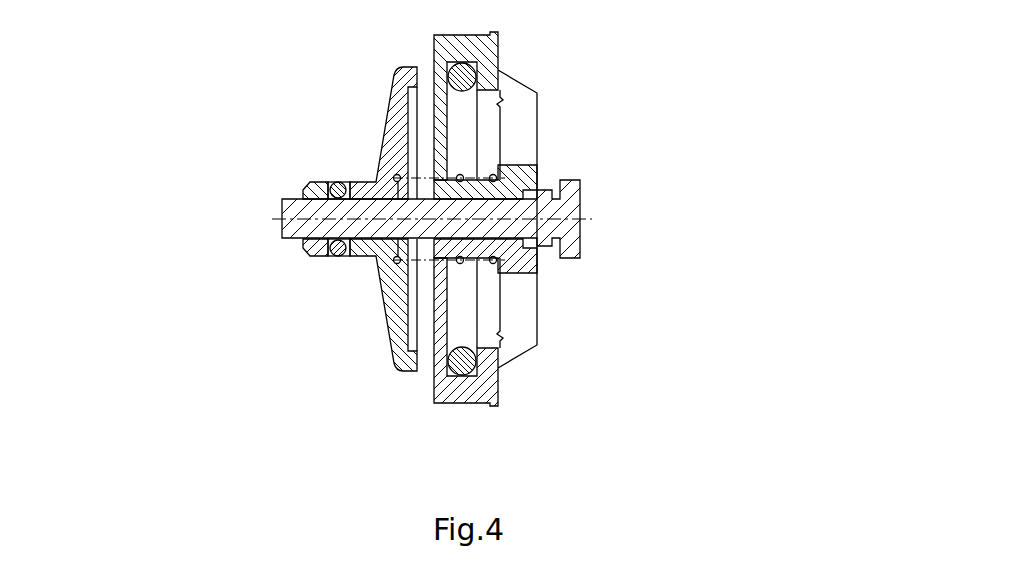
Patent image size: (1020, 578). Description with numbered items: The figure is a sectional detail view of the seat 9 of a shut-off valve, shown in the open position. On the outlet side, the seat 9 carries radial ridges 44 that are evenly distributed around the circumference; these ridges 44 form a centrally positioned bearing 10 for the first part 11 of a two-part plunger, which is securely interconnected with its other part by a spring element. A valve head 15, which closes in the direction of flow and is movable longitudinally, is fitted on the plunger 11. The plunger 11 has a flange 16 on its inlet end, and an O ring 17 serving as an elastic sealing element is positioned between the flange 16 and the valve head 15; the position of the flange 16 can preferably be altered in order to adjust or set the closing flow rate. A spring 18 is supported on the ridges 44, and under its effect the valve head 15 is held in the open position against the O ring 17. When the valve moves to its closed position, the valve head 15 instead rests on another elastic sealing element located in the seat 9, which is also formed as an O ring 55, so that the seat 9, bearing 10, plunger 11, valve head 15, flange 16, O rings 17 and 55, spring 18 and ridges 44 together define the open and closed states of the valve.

The seat 9 is at (483, 390).
The bearing 10 is at (493, 237).
The first part of the plunger 11 is at (563, 208).
The valve head 15 is at (375, 248).
The flange 16 is at (315, 246).
The O ring 17 is at (340, 241).
The spring 18 is at (427, 177).
The radial ridges 44 is at (517, 291).
The O ring 55 is at (462, 77).